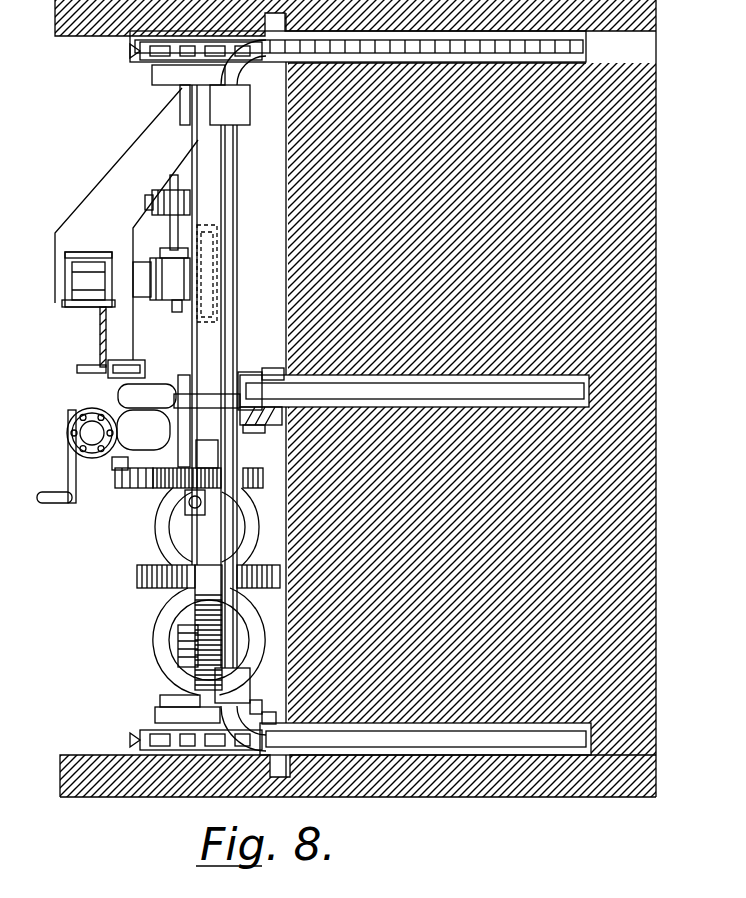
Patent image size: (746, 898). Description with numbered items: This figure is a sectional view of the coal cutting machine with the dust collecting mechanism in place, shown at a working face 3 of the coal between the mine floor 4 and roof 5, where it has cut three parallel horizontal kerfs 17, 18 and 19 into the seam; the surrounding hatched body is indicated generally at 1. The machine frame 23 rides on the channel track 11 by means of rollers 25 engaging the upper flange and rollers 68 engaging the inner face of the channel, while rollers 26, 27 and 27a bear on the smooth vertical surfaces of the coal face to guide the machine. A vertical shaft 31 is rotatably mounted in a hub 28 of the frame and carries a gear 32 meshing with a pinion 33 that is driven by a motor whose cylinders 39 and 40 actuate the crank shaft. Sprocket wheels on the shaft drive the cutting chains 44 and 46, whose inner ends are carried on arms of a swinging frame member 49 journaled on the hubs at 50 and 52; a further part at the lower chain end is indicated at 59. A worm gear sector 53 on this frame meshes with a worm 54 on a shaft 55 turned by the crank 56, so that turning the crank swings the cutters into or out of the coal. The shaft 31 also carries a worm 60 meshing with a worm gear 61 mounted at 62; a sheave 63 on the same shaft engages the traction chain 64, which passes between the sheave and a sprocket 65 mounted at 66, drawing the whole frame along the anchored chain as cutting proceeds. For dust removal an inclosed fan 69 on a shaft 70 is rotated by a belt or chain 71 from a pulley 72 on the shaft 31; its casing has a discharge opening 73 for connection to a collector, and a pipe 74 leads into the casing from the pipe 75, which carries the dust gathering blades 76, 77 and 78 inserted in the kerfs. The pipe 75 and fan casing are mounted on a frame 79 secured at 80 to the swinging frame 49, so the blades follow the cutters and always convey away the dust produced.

The casing wall 1 is at (618, 188).
The working face 3 is at (285, 160).
The floor 4 is at (103, 765).
The roof 5 is at (105, 26).
The track 11 is at (100, 343).
The kerf 17 is at (432, 62).
The kerf 18 is at (476, 407).
The kerf 19 is at (460, 755).
The frame 23 is at (90, 192).
The rollers 25 is at (72, 305).
The roller 26 is at (258, 110).
The roller 27 is at (270, 365).
The roller 27a is at (290, 755).
The hub 28 is at (130, 142).
The vertical shaft 31 is at (160, 645).
The gear 32 is at (195, 590).
The pinion 33 is at (195, 610).
The cylinder 39 is at (176, 660).
The cylinder 40 is at (137, 575).
The cutting chain 44 is at (130, 52).
The cutting chain 46 is at (188, 760).
The frame member 49 is at (192, 143).
The journal 50 is at (200, 78).
The journal 52 is at (155, 713).
The worm gear sector 53 is at (261, 421).
The worm 54 is at (258, 432).
The shaft 55 is at (70, 430).
The crank 56 is at (68, 472).
The chain guide 59 is at (130, 740).
The worm 60 is at (178, 312).
The worm gear 61 is at (218, 238).
The mounting 62 is at (145, 300).
The sheave 63 is at (162, 265).
The traction chain 64 is at (165, 250).
The sprocket 65 is at (172, 186).
The mounting 66 is at (160, 196).
The rollers 68 is at (140, 356).
The fan 69 is at (143, 430).
The shaft 70 is at (168, 491).
The belt or chain 71 is at (172, 520).
The pulley 72 is at (252, 470).
The discharge opening 73 is at (114, 466).
The pipe 74 is at (118, 396).
The pipe 75 is at (240, 203).
The dust gathering blade 76 is at (252, 90).
The dust gathering blade 77 is at (262, 378).
The dust gathering blade 78 is at (268, 712).
The frame 79 is at (207, 454).
The securing point 80 is at (202, 502).